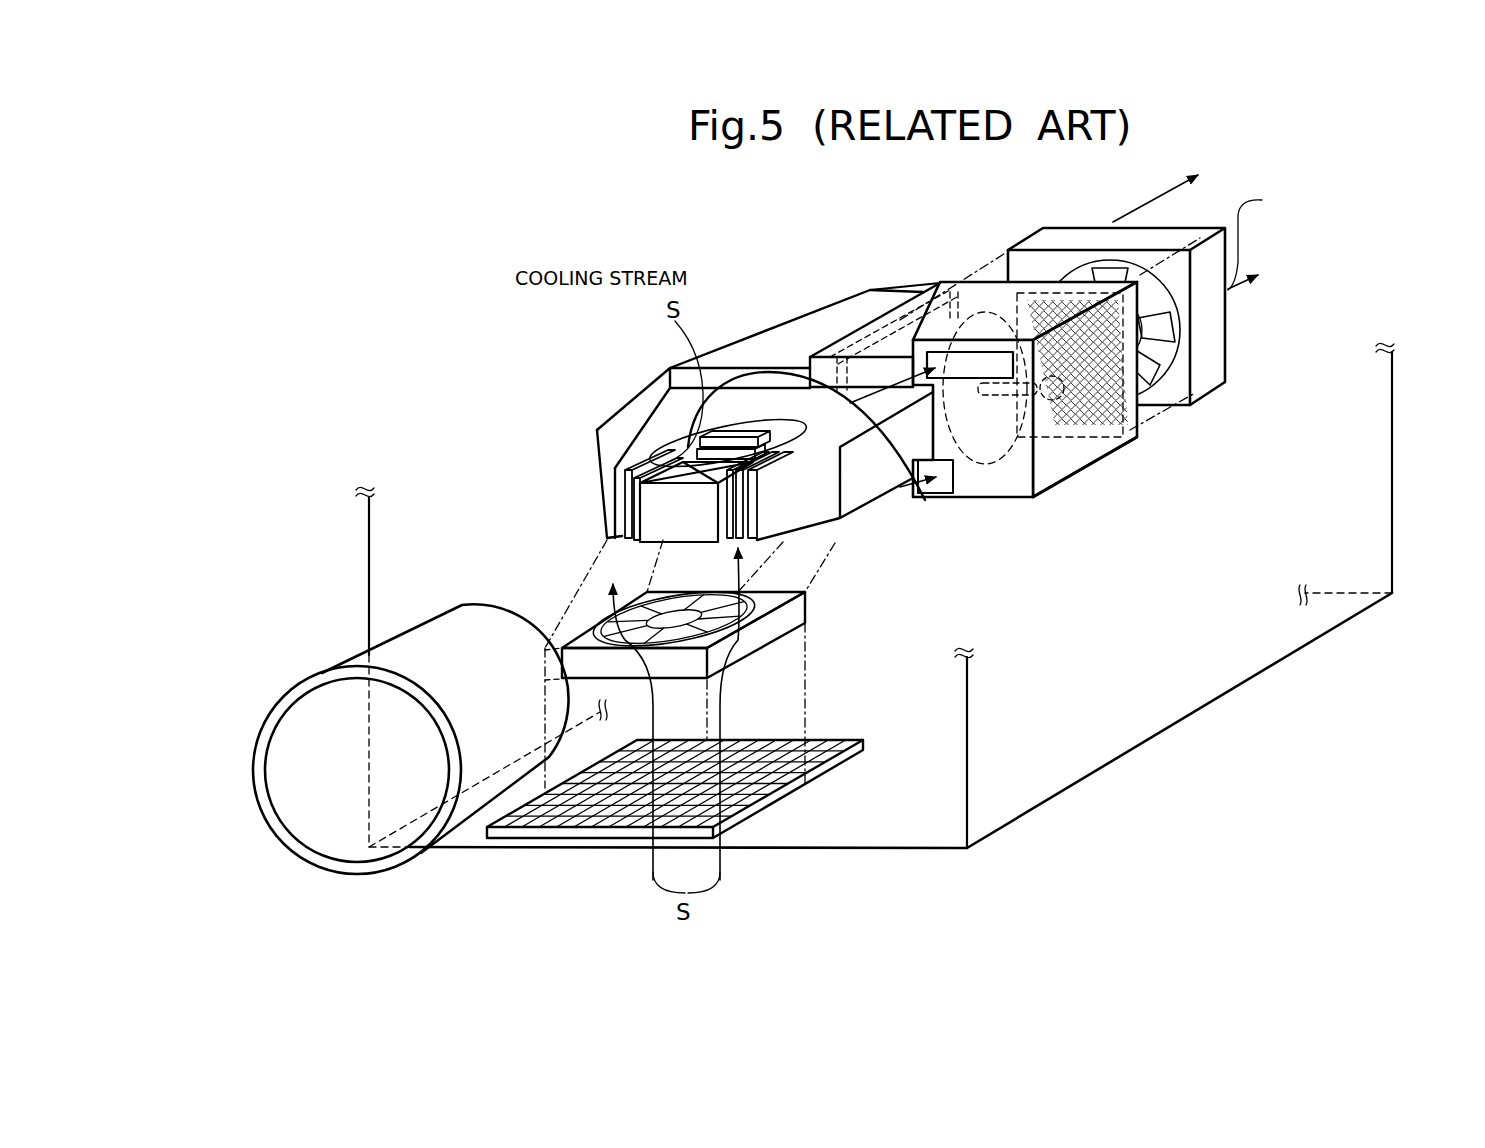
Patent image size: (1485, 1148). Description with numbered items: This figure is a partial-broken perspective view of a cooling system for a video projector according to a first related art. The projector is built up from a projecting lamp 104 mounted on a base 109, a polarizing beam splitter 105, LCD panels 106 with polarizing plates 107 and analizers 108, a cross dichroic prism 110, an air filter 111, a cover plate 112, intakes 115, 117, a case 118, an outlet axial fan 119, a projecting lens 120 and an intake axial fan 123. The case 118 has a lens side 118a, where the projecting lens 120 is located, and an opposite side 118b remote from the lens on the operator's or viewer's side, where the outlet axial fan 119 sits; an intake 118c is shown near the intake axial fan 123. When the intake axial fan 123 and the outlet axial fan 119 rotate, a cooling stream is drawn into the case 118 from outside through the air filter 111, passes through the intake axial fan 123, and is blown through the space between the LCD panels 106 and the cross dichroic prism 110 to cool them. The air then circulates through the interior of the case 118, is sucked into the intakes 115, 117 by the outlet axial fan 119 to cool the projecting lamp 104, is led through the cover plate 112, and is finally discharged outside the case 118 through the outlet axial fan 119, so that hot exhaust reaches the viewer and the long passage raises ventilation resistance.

The projecting lamp 104 is at (1096, 410).
The polarizing beam splitter 105 is at (893, 313).
The LCD panels 106 is at (645, 512).
The polarizing plates 107 is at (642, 458).
The analizers 108 is at (758, 520).
The base 109 is at (1063, 453).
The cross dichroic prism 110 is at (655, 518).
The air filter 111 is at (780, 773).
The cover plate 112 is at (1105, 372).
The intake 115 is at (1010, 458).
The intake 117 is at (945, 495).
The case 118 is at (1125, 713).
The lens side 118a is at (778, 827).
The opposite side 118b is at (1393, 560).
The intake 118c is at (820, 740).
The outlet axial fan 119 is at (1212, 300).
The projecting lens 120 is at (358, 662).
The intake axial fan 123 is at (805, 605).